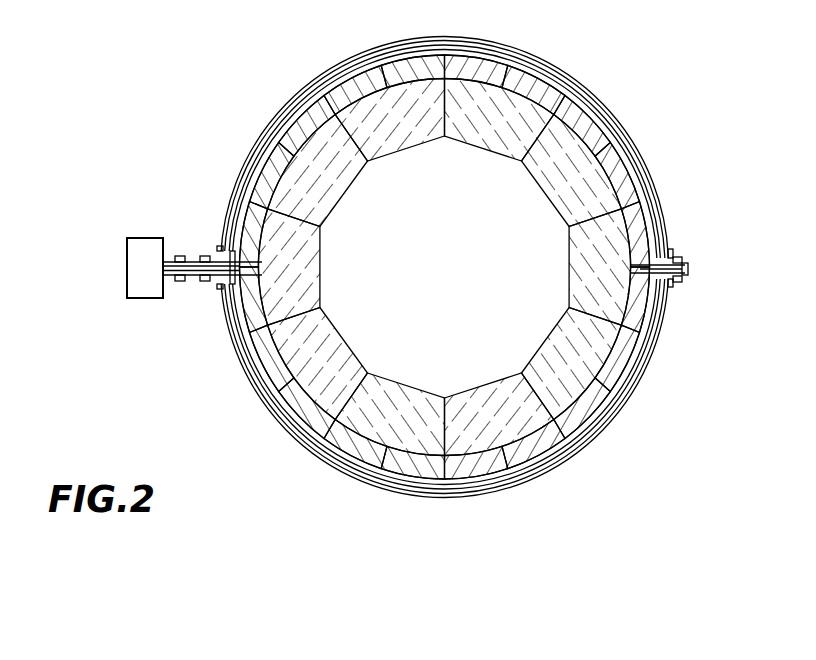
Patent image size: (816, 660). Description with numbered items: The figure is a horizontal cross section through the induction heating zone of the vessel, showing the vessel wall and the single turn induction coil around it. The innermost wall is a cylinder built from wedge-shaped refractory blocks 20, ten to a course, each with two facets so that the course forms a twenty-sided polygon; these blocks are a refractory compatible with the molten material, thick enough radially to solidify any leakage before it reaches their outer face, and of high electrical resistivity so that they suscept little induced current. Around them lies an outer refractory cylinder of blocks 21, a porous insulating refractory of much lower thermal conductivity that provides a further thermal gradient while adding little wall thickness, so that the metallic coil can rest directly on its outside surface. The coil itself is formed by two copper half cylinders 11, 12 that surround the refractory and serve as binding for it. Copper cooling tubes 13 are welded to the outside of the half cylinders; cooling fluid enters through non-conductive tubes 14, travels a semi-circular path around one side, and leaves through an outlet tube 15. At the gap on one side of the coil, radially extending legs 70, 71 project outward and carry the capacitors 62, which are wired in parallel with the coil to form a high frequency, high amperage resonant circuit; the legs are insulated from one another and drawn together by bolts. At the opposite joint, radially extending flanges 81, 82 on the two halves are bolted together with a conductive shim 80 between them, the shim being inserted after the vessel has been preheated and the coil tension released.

The half cylinder 11 is at (623, 398).
The half cylinder 12 is at (440, 49).
The cooling tube 13 is at (292, 105).
The non-conductive tube 14 is at (221, 246).
The outlet tube 15 is at (674, 296).
The refractory block 20 is at (362, 164).
The outer refractory block 21 is at (600, 127).
The capacitor 62 is at (127, 243).
The leg 70 is at (199, 251).
The leg 71 is at (199, 285).
The conductive shim 80 is at (689, 268).
The flange 81 is at (684, 257).
The flange 82 is at (685, 277).